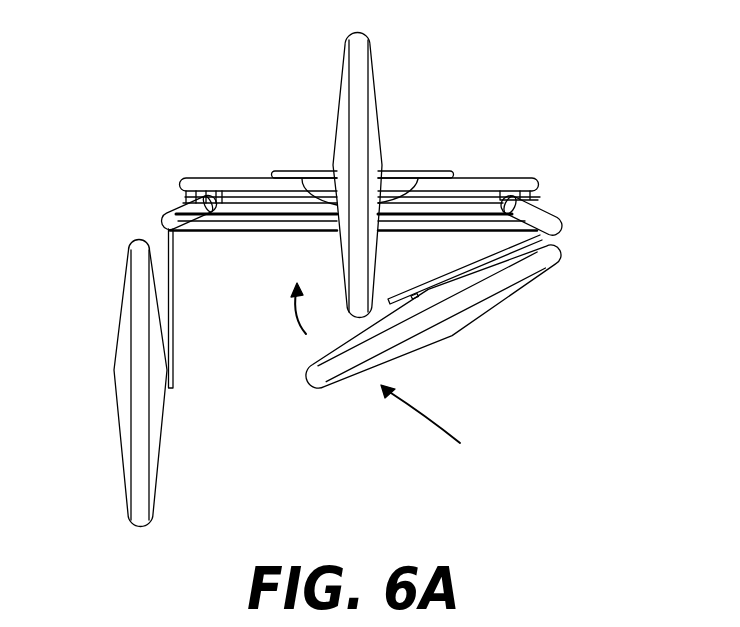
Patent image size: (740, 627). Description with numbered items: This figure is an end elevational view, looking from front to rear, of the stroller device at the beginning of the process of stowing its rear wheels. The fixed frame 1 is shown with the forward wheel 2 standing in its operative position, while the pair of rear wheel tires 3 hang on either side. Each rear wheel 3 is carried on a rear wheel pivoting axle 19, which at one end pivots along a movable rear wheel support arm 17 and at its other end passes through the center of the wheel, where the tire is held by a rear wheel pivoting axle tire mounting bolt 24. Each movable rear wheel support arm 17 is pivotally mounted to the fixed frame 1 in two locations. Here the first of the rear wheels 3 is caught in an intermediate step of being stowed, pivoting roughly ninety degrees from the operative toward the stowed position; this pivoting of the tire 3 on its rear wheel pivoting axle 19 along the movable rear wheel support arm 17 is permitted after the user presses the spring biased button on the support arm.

The fixed frame 1 is at (476, 176).
The forward wheel 2 is at (375, 48).
The rear wheel 3 is at (125, 515).
The movable rear wheel support arm 17 is at (174, 207).
The rear wheel pivoting axle 19 is at (172, 287).
The rear wheel pivoting axle tire mounting bolt 24 is at (118, 380).